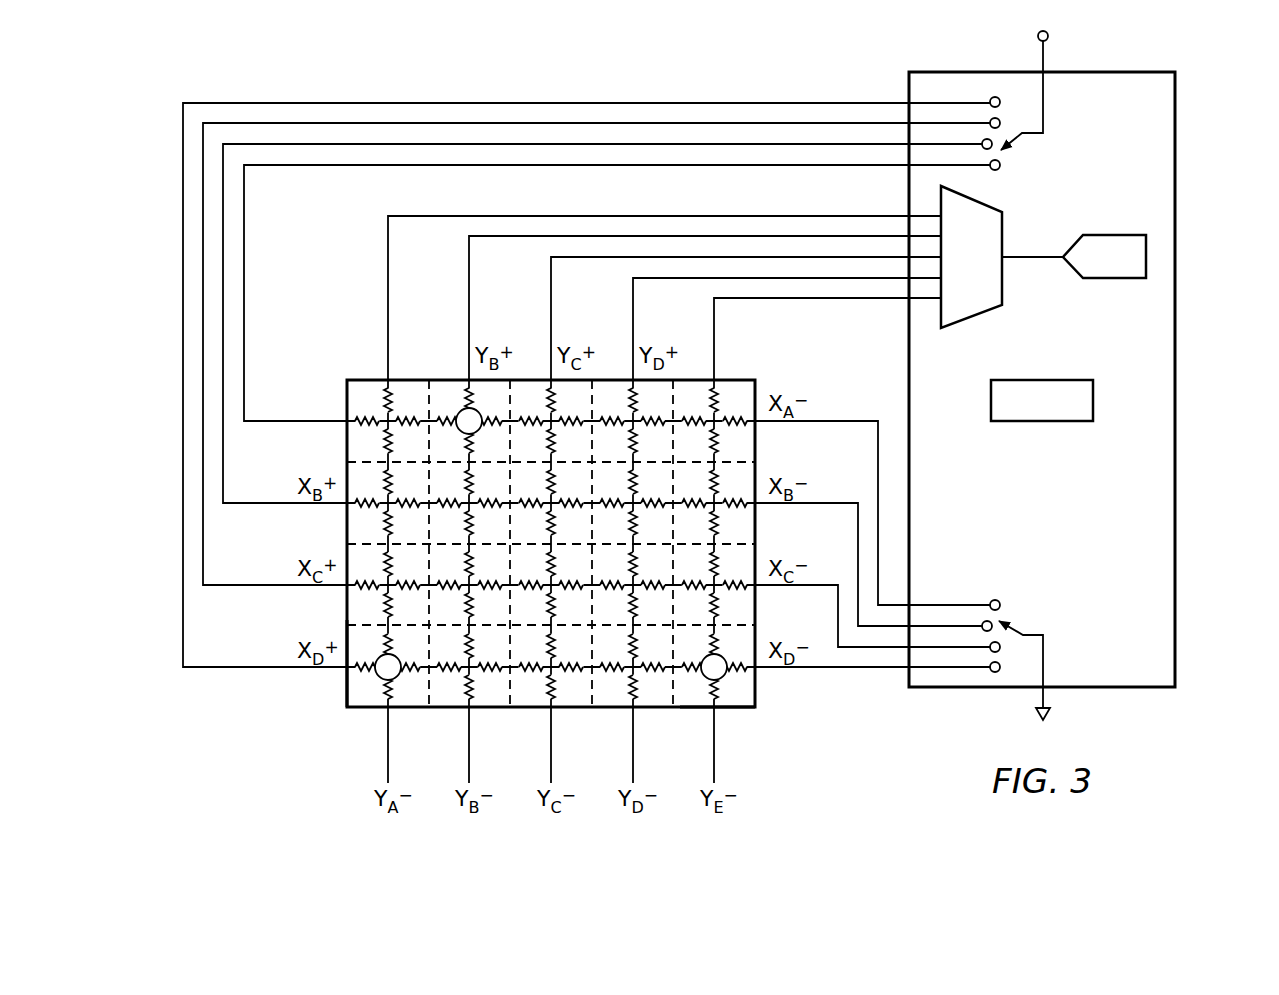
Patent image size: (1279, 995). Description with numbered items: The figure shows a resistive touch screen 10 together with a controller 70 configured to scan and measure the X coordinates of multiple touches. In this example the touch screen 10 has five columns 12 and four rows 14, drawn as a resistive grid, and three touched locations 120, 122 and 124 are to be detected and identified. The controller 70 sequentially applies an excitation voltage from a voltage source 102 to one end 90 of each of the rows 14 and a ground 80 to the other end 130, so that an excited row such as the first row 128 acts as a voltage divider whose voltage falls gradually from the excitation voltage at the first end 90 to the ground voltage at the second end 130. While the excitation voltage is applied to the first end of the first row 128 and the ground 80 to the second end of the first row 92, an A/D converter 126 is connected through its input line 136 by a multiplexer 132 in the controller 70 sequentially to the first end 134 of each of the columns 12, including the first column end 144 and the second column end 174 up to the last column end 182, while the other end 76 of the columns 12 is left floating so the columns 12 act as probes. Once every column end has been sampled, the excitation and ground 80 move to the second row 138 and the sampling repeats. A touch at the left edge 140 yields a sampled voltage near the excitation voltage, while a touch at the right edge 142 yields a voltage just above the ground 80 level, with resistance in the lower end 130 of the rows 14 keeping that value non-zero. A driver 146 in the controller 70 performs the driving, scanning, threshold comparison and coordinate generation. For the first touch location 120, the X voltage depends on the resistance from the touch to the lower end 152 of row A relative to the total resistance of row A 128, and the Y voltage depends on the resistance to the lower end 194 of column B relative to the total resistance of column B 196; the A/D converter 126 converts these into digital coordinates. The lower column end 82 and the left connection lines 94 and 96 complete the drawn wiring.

The touch screen 10 is at (757, 437).
The columns 12 is at (376, 359).
The rows 14 is at (302, 377).
The controller 70 is at (1181, 393).
The other end of the columns 76 is at (764, 729).
The ground 80 is at (1048, 718).
The Y A negative line 82 is at (390, 716).
The one end of the rows 90 is at (310, 681).
The first row 92 is at (262, 422).
The X B positive connection line 94 is at (259, 504).
The X D positive connection line 96 is at (270, 668).
The voltage source 102 is at (1042, 56).
The touch location 1 120 is at (459, 409).
The touch location 122 is at (377, 657).
The touch location 124 is at (706, 678).
The A/D converter 126 is at (1108, 236).
The first row 128 is at (347, 438).
The other end of the rows 130 is at (834, 711).
The multiplexer 132 is at (972, 318).
The first end of the columns 134 is at (768, 354).
The multiplexer output 136 is at (1035, 256).
The second row 138 is at (347, 518).
The left edge of the touch screen 140 is at (347, 730).
The right edge of the touch screen 142 is at (757, 746).
The column YA+ 144 is at (388, 290).
The driver 146 is at (1044, 422).
The lower end XA- of row A 152 is at (838, 420).
The column YB+ 174 is at (469, 268).
The last column YE+ 182 is at (714, 320).
The lower end YB- of column B 194 is at (469, 748).
The column B 196 is at (500, 708).